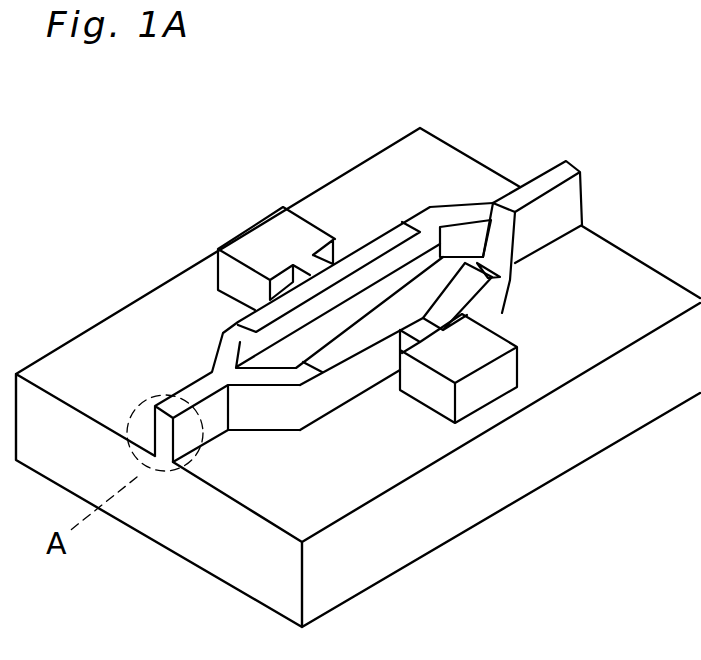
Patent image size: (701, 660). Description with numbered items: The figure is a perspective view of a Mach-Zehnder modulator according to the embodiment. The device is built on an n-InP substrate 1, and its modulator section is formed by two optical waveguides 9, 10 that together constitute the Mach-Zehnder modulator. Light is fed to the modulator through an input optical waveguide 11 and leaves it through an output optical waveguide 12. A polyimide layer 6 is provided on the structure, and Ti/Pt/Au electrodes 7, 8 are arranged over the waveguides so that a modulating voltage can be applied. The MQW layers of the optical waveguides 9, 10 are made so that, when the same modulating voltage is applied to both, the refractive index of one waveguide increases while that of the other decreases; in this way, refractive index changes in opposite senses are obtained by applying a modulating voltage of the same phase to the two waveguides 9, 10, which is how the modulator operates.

The n-InP substrate 1 is at (390, 548).
The polyimide layer 6 is at (507, 377).
The Ti/Pt/Au electrode 7 is at (493, 340).
The Ti/Pt/Au electrode 8 is at (305, 230).
The optical waveguide 9 is at (333, 388).
The optical waveguide 10 is at (432, 236).
The input optical waveguide 11 is at (542, 178).
The output optical waveguide 12 is at (190, 392).